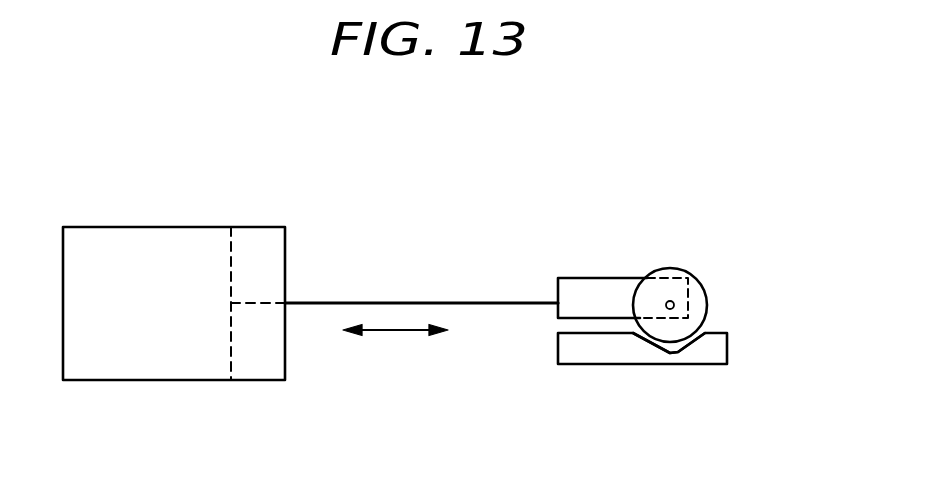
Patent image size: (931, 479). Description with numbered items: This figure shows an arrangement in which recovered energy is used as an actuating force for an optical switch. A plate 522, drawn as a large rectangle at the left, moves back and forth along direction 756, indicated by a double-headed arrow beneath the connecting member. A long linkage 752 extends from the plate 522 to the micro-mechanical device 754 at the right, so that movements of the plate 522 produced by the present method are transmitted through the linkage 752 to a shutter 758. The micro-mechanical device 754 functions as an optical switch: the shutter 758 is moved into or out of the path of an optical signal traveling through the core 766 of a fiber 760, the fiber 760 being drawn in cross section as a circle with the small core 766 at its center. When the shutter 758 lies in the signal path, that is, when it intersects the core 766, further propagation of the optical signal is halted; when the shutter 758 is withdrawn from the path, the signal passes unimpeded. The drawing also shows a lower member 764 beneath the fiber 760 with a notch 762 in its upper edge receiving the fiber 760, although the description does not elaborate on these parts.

The plate 522 is at (230, 248).
The linkage 752 is at (393, 300).
The micro-mechanical device 754 is at (678, 237).
The direction 756 is at (391, 335).
The shutter 758 is at (597, 292).
The fiber 760 is at (708, 300).
The notch 762 is at (679, 354).
The base member 764 is at (727, 352).
The core 766 is at (667, 309).